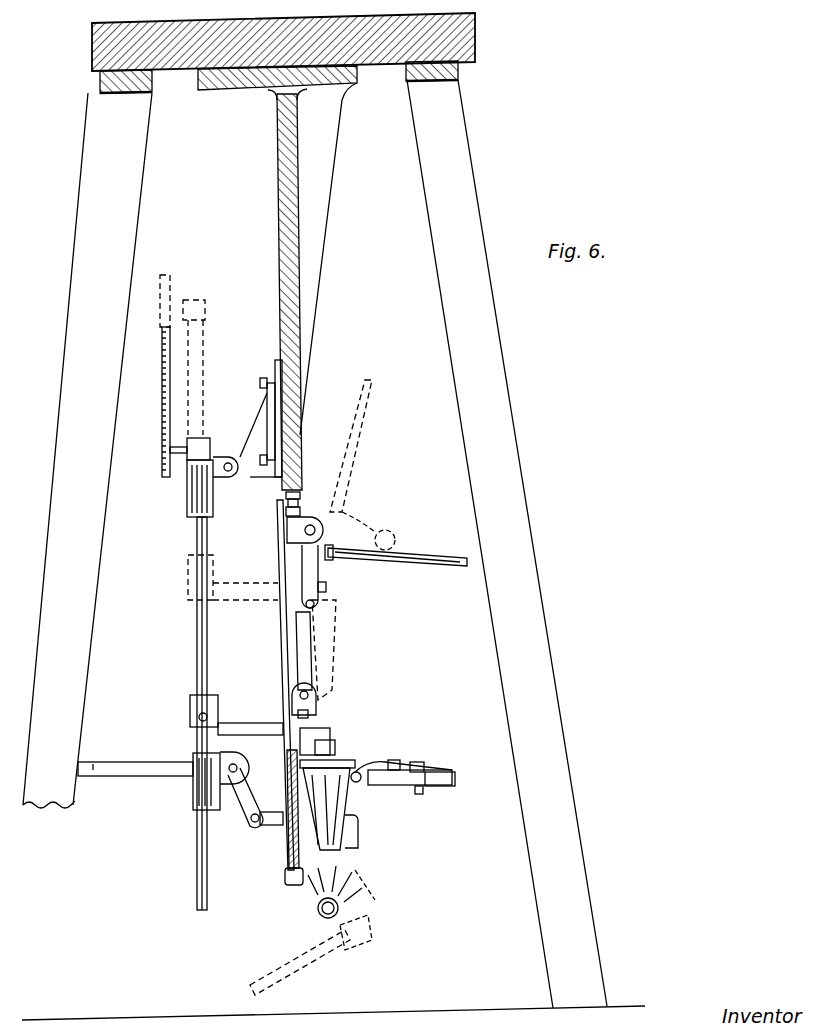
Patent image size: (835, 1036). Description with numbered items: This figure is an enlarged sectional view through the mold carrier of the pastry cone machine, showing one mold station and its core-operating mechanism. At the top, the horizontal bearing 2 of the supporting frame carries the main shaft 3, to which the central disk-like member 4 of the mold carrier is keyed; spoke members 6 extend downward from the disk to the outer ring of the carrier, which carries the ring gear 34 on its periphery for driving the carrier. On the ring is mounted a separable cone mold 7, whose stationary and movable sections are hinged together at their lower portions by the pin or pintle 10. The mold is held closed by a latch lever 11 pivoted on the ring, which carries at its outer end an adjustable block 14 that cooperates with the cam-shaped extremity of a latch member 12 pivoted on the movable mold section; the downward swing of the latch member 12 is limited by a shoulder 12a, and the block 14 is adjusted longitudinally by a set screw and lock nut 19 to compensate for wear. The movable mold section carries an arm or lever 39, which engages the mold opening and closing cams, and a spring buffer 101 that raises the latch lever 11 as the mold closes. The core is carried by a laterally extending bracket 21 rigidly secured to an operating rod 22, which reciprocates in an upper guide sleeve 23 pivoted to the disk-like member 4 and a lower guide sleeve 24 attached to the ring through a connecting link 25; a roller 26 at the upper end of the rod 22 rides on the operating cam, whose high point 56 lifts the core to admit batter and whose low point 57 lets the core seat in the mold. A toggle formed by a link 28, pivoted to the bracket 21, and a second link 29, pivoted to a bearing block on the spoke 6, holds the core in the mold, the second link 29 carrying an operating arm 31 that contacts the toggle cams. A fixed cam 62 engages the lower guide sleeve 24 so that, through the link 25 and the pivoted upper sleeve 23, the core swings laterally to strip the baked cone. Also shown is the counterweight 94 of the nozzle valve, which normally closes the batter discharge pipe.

The horizontal bearing 2 is at (100, 81).
The main shaft 3 is at (440, 34).
The central disk-like member 4 is at (277, 168).
The spoke member 6 is at (283, 653).
The cone mold 7 is at (352, 803).
The pin or pintle 10 is at (300, 880).
The latch lever 11 is at (368, 788).
The latch member 12 is at (377, 765).
The shoulder 12a is at (355, 763).
The adjustable block 14 is at (403, 765).
The set screw and lock nut 19 is at (418, 765).
The bracket 21 is at (252, 727).
The operating rod 22 is at (197, 628).
The upper guide sleeve 23 is at (200, 493).
The lower guide sleeve 24 is at (197, 798).
The connecting link 25 is at (243, 800).
The roller 26 is at (162, 438).
The link 28 is at (306, 650).
The second link 29 is at (322, 583).
The operating rod or arm 31 is at (433, 558).
The ring gear 34 is at (287, 862).
The arm or lever 39 is at (452, 775).
The high point 56 is at (168, 337).
The low point 57 is at (170, 473).
The fixed cam 62 is at (185, 775).
The counterweight 94 is at (342, 910).
The spring buffer 101 is at (355, 833).